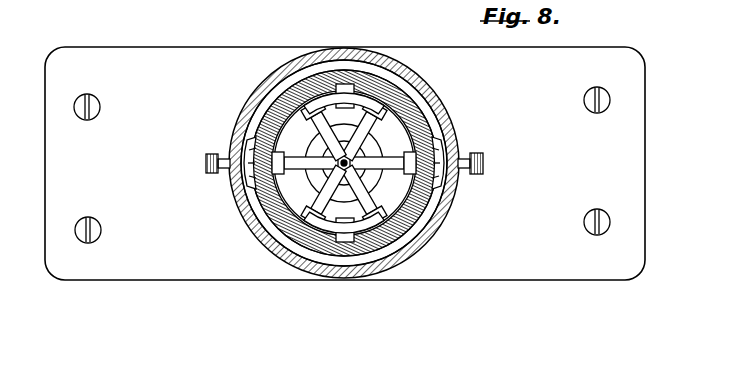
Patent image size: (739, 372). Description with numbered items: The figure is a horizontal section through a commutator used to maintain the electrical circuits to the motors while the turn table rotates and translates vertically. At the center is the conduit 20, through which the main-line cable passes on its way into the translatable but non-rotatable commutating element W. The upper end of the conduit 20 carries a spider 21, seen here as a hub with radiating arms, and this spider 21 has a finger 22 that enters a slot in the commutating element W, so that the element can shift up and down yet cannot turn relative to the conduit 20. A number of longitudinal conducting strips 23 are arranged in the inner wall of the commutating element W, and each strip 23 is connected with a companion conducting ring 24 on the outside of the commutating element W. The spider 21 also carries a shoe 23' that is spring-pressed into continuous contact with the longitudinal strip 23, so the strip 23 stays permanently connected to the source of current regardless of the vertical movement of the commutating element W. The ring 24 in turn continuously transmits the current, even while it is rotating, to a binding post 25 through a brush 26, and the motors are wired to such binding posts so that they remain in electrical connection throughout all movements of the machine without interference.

The conduit 20 is at (363, 151).
The spider 21 is at (420, 133).
The finger 22 is at (344, 236).
The longitudinal conducting strip 23 is at (344, 163).
The shoe 23' is at (354, 145).
The conducting ring 24 is at (270, 108).
The binding post 25 is at (212, 173).
The brush 26 is at (241, 189).
The commutating element W is at (430, 213).